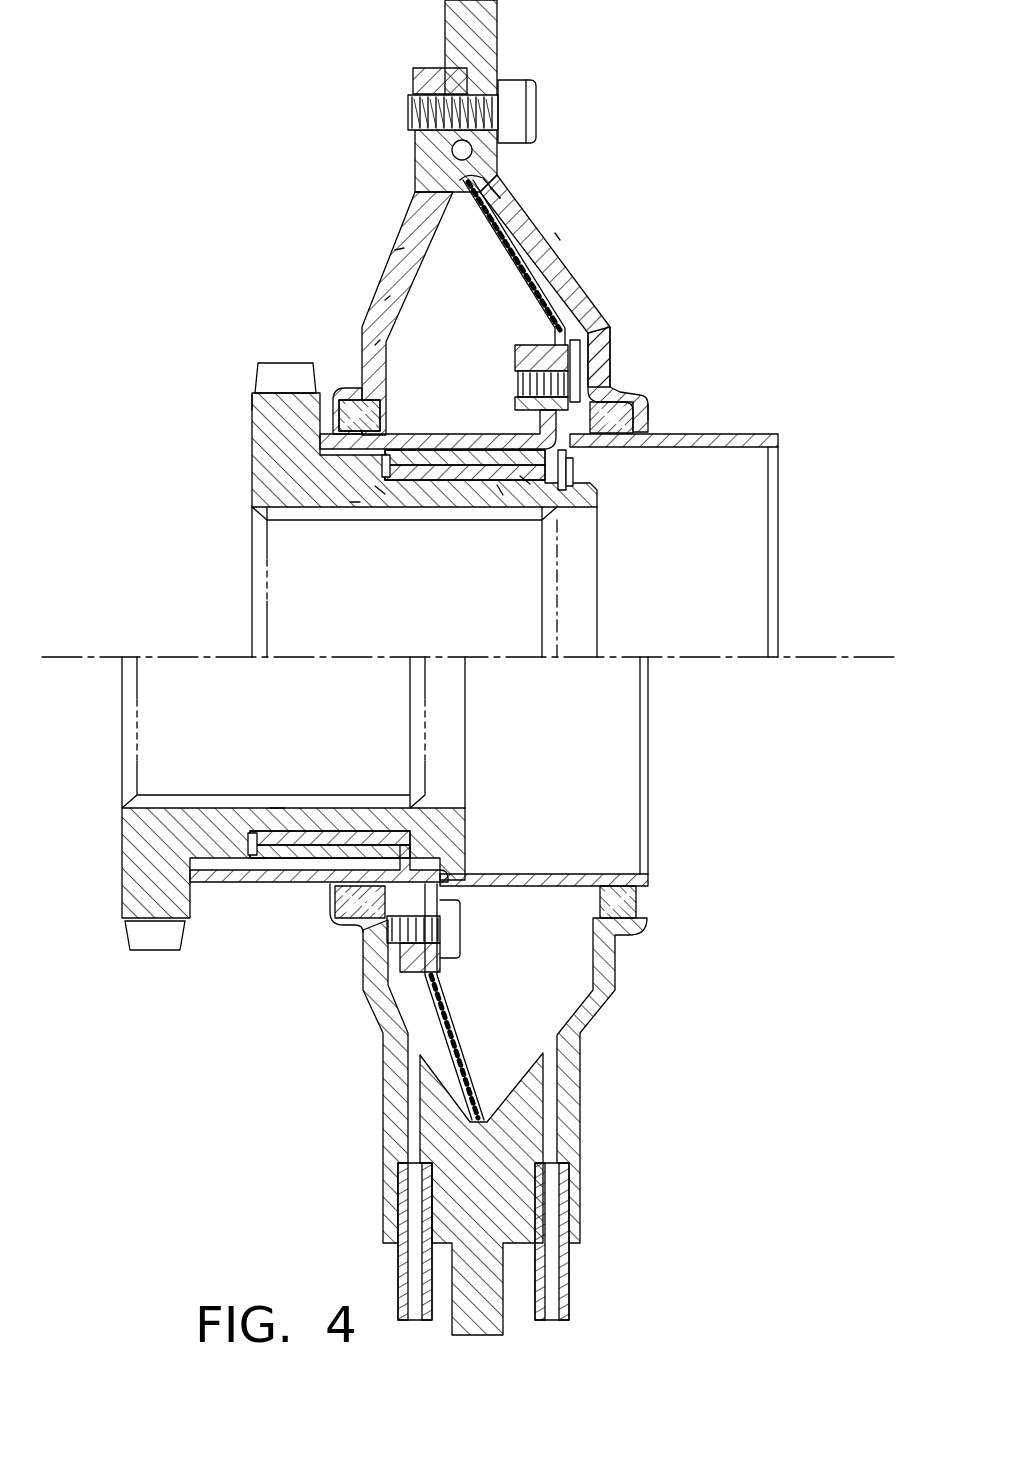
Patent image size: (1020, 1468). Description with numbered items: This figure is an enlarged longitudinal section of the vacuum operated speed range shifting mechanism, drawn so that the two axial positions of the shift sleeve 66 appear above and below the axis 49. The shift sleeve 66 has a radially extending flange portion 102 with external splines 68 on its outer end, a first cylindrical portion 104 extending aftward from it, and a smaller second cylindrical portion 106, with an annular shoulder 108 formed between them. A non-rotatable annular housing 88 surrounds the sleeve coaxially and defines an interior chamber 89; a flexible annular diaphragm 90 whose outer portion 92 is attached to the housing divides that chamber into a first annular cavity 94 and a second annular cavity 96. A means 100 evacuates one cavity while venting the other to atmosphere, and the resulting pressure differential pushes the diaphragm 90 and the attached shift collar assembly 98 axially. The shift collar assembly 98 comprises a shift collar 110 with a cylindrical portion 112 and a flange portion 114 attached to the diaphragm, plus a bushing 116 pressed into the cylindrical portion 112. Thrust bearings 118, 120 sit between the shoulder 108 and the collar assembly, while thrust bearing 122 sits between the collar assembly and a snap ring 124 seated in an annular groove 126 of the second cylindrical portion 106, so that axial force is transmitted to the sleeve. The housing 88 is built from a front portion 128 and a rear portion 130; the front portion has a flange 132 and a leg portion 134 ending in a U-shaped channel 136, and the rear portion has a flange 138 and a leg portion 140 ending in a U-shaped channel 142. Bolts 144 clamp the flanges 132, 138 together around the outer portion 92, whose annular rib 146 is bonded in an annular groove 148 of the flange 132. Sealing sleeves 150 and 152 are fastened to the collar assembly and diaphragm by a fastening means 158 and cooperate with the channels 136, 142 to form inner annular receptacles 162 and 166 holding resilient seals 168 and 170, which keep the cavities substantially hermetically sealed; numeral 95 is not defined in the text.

The axis 49 is at (98, 657).
The shift sleeve 66 is at (255, 450).
The external splines 68 is at (280, 365).
The annular housing 88 is at (505, 32).
The interior chamber 89 is at (375, 345).
The flexible annular diaphragm 90 is at (555, 320).
The outer portion of diaphragm 92 is at (500, 195).
The first annular cavity 94 is at (451, 266).
The cone leg 95 is at (440, 233).
The second annular cavity 96 is at (545, 285).
The shift collar assembly 98 is at (285, 905).
The means for evacuating and venting 100 is at (595, 1280).
The flange portion of shift sleeve 102 is at (254, 402).
The first cylindrical portion 104 is at (355, 507).
The second cylindrical portion 106 is at (500, 490).
The shoulder 108 is at (400, 452).
The shift collar 110 is at (520, 455).
The cylindrical portion of shift collar 112 is at (405, 490).
The flange portion of shift collar 114 is at (566, 455).
The bushing 116 is at (525, 480).
The thrust bearing 118 is at (250, 838).
The thrust bearing 120 is at (278, 808).
The thrust bearing 122 is at (480, 884).
The snap ring 124 is at (440, 842).
The annular groove 126 is at (465, 835).
The front portion of housing 128 is at (395, 250).
The rear portion of housing 130 is at (560, 240).
The flange of front portion 132 is at (415, 170).
The leg portion of front portion 134 is at (385, 300).
The U-shaped channel of front portion 136 is at (333, 390).
The flange of rear portion 138 is at (500, 185).
The leg portion of rear portion 140 is at (612, 340).
The U-shaped channel of rear portion 142 is at (650, 410).
The bolts 144 is at (518, 82).
The annular rib 146 is at (445, 146).
The annular groove 148 is at (472, 150).
The sealing sleeve 150 is at (455, 470).
The sealing sleeve 152 is at (745, 434).
The fastening means 158 is at (505, 348).
The inner annular receptacle 162 is at (345, 415).
The inner annular receptacle 166 is at (615, 425).
The seal 168 is at (380, 490).
The seal 170 is at (600, 402).